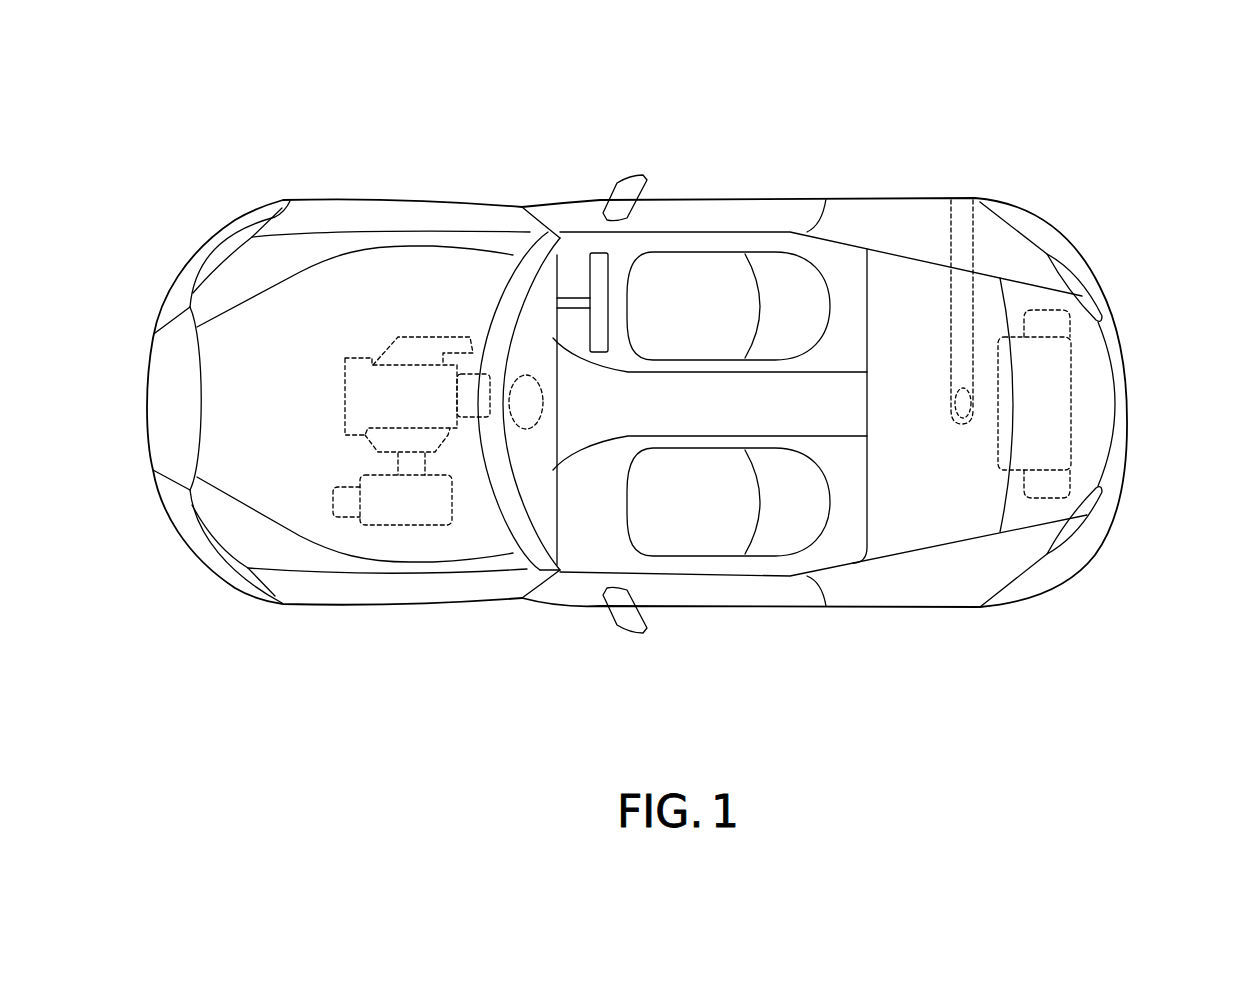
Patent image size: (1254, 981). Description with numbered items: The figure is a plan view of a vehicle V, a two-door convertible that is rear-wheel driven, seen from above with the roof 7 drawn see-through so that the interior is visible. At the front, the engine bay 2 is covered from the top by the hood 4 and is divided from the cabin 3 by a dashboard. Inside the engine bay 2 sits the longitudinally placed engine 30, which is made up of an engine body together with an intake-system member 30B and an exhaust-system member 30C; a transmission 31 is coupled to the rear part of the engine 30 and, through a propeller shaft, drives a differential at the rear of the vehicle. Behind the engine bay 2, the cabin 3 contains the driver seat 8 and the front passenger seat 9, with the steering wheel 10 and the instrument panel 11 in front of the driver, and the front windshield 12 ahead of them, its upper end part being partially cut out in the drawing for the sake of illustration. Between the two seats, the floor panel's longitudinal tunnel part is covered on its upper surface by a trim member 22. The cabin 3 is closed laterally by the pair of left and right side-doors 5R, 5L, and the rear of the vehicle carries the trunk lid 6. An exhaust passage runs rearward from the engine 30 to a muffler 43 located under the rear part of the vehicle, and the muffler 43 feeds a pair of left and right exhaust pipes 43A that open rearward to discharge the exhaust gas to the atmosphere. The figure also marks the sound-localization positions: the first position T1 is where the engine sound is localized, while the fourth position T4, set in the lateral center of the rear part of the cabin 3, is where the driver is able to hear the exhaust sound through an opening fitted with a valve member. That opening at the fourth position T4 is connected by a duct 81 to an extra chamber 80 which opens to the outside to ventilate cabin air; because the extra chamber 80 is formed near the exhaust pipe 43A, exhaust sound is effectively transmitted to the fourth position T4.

The vehicle V is at (770, 52).
The engine bay 2 is at (267, 492).
The cabin 3 is at (593, 548).
The hood 4 is at (230, 458).
The right side-door 5R is at (735, 212).
The left side-door 5L is at (735, 597).
The trunk lid 6 is at (1088, 372).
The roof 7 is at (917, 517).
The driver seat 8 is at (723, 275).
The front passenger seat 9 is at (697, 535).
The steering wheel 10 is at (610, 263).
The instrument panel 11 is at (540, 497).
The front windshield 12 is at (513, 284).
The trim member 22 is at (783, 410).
The engine 30 is at (343, 377).
The intake-system member 30B is at (365, 478).
The exhaust-system member 30C is at (420, 345).
The transmission 31 is at (477, 418).
The muffler 43 is at (1060, 413).
The exhaust pipes 43A is at (1050, 330).
The extra chamber 80 is at (966, 200).
The duct 81 is at (963, 233).
The first position T1 is at (545, 402).
The fourth position T4 is at (958, 422).